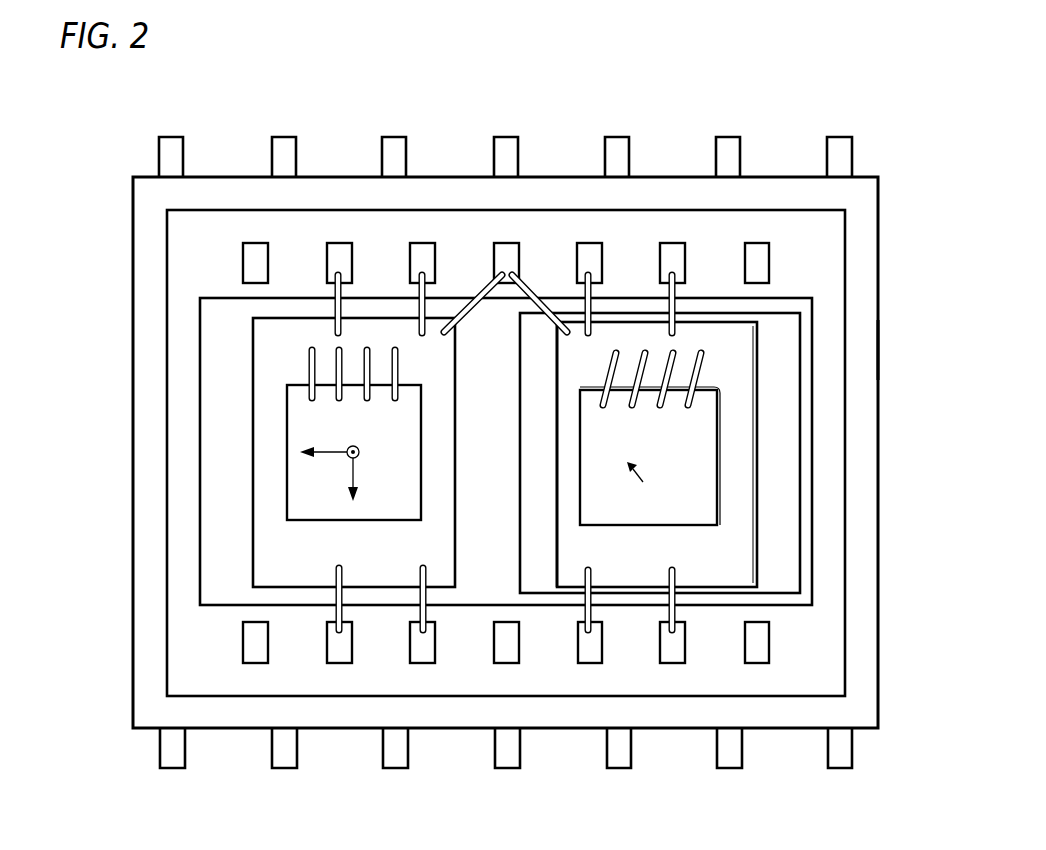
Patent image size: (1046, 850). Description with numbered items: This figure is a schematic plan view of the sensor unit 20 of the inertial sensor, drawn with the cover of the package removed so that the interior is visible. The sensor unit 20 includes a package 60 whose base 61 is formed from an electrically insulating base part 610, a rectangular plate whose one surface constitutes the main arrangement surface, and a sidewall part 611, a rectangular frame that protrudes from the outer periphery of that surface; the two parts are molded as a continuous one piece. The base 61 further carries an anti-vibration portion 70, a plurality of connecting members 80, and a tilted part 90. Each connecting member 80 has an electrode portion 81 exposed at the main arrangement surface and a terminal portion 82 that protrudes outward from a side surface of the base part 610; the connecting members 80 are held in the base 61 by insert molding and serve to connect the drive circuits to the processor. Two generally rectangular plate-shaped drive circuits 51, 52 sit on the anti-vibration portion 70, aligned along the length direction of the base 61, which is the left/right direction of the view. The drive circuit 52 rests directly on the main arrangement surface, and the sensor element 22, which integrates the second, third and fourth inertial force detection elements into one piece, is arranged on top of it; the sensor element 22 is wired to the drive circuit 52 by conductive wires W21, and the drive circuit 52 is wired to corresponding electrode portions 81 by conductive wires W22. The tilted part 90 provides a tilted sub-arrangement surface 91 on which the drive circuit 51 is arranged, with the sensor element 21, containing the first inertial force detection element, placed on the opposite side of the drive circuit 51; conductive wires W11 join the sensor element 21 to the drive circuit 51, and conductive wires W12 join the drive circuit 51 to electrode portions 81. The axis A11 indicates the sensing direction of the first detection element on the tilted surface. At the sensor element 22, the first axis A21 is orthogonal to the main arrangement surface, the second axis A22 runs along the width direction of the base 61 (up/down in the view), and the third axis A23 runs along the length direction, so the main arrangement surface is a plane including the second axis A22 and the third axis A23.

The sensor unit 20 is at (250, 116).
The sensor element 21 is at (703, 517).
The sensor element 22 is at (311, 510).
The drive circuit 51 is at (572, 550).
The drive circuit 52 is at (447, 413).
The package 60 is at (870, 218).
The base 61 is at (868, 253).
The base part 610 is at (835, 295).
The sidewall part 611 is at (863, 347).
The anti-vibration portion 70 is at (218, 305).
The connecting members 80 is at (507, 143).
The electrode portion 81 is at (769, 257).
The terminal portion 82 is at (836, 145).
The tilted part 90 is at (748, 425).
The sub-arrangement surface 91 is at (745, 463).
The conductive wires W11 is at (698, 372).
The conductive wires W12 is at (677, 293).
The conductive wires W21 is at (311, 378).
The conductive wires W22 is at (336, 293).
The axis A11 is at (648, 487).
The first axis A21 is at (358, 447).
The second axis A22 is at (354, 475).
The third axis A23 is at (323, 452).